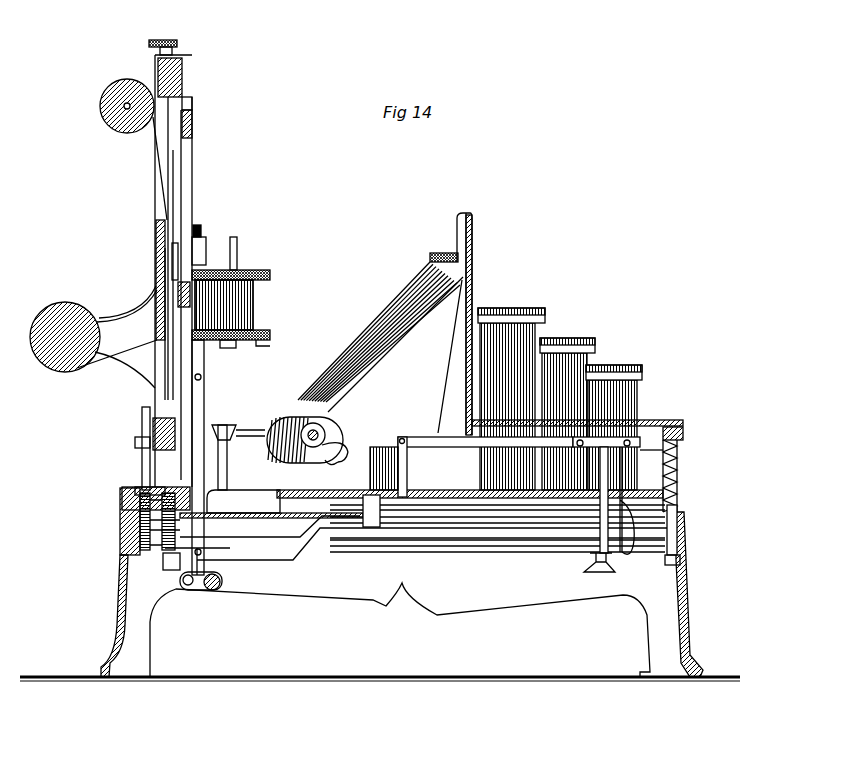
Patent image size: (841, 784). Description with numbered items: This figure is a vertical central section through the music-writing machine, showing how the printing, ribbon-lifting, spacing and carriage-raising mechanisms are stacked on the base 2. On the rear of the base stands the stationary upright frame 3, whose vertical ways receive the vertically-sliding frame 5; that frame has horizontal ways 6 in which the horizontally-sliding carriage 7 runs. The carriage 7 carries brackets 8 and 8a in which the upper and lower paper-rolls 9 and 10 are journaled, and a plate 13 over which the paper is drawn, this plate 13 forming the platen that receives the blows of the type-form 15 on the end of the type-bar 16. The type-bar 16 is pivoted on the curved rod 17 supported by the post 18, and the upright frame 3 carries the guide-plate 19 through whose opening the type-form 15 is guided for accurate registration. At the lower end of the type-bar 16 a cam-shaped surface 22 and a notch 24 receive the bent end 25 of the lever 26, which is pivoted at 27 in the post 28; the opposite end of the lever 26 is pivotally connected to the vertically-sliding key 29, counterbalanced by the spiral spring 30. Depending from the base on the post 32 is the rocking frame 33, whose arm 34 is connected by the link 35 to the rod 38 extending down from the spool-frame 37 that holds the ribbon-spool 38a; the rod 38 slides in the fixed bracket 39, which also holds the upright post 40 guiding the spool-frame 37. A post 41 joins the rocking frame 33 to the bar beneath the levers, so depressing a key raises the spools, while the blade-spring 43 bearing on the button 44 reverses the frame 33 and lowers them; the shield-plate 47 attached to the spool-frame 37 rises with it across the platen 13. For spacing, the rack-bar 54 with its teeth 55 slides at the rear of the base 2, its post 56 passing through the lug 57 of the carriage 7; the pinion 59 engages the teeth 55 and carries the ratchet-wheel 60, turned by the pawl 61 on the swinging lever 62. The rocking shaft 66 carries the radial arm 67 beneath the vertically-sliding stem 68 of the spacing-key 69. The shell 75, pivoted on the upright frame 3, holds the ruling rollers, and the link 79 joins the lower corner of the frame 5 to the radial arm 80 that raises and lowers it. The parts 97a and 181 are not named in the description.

The base 2 is at (118, 582).
The stationary upright frame 3 is at (193, 147).
The vertically-sliding frame 5 is at (178, 204).
The horizontal ways 6 is at (180, 72).
The horizontally-sliding carriage 7 is at (160, 84).
The bracket 8 is at (158, 104).
The bracket 8a is at (128, 366).
The upper paper-roll 9 is at (108, 100).
The lower paper-roll 10 is at (52, 370).
The plate 13 is at (157, 272).
The type-form 15 is at (430, 256).
The type-bar 16 is at (392, 372).
The curved rod 17 is at (320, 432).
The post 18 is at (230, 466).
The guide-plate 19 is at (172, 255).
The cam-shaped surface 22 is at (342, 436).
The notch 24 is at (330, 460).
The bent end 25 is at (336, 456).
The lever 26 is at (382, 436).
The pivot 27 is at (404, 437).
The post 28 is at (392, 470).
The vertically-sliding key 29 is at (538, 328).
The spiral spring 30 is at (680, 474).
The post 32 is at (373, 511).
The rocking frame 33 is at (296, 562).
The arm 34 is at (210, 558).
The link 35 is at (204, 396).
The spool-frame 37 is at (262, 344).
The rod 38 is at (262, 332).
The ribbon-spool 38a is at (270, 276).
The fixed bracket 39 is at (226, 348).
The upright post 40 is at (238, 245).
The post 41 is at (626, 555).
The blade-spring 43 is at (680, 462).
The button 44 is at (586, 556).
The shield-plate 47 is at (158, 318).
The rack-bar 54 is at (142, 488).
The rack-teeth 55 is at (122, 496).
The post 56 is at (141, 410).
The lug 57 is at (135, 446).
The pinion 59 is at (125, 530).
The ratchet-wheel 60 is at (168, 540).
The pawl 61 is at (178, 560).
The swinging lever 62 is at (176, 572).
The rocking shaft 66 is at (495, 552).
The radial arm 67 is at (668, 564).
The vertically-sliding stem 68 is at (680, 528).
The spacing-key 69 is at (684, 433).
The shell 75 is at (203, 245).
The link 79 is at (188, 545).
The radial arm 80 is at (196, 590).
The knob 97a is at (178, 43).
The roller 181 is at (222, 584).